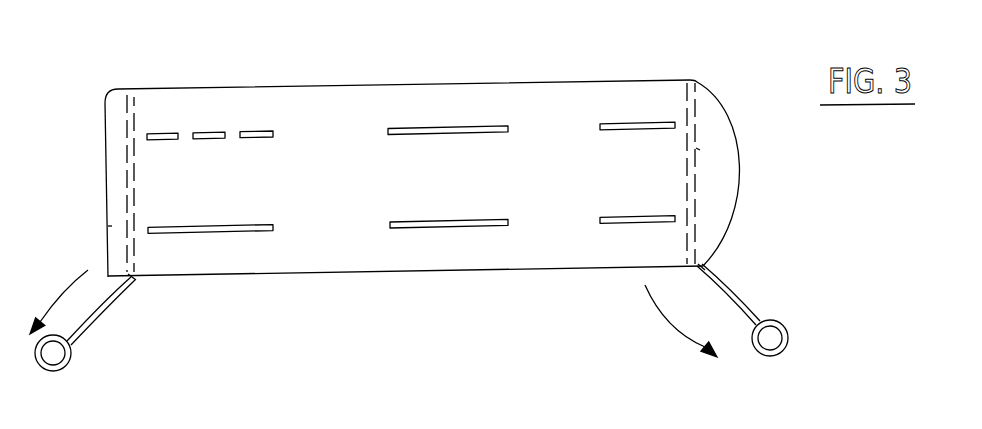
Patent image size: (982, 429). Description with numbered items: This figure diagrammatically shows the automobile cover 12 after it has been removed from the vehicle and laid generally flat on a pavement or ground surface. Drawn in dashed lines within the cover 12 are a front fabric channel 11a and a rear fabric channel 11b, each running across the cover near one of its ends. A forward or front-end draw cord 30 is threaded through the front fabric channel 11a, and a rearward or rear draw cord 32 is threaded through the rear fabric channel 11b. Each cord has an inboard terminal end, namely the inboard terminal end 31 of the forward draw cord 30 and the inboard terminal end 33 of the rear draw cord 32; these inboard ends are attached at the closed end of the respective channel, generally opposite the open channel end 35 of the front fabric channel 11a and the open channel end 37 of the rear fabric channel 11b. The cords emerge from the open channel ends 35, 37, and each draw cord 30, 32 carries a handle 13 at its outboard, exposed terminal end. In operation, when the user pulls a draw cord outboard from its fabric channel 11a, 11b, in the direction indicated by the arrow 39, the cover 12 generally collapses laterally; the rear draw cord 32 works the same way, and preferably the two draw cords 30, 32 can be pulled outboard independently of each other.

The cover 12 is at (107, 160).
The inboard terminal end 31 is at (124, 89).
The inboard terminal end 33 is at (690, 72).
The front fabric channel 11a is at (108, 226).
The rear fabric channel 11b is at (696, 148).
The forward draw cord 30 is at (103, 330).
The rear draw cord 32 is at (735, 320).
The handle 13 is at (66, 365).
The arrow 39 is at (73, 302).
The open channel end 35 is at (132, 278).
The open channel end 37 is at (703, 270).